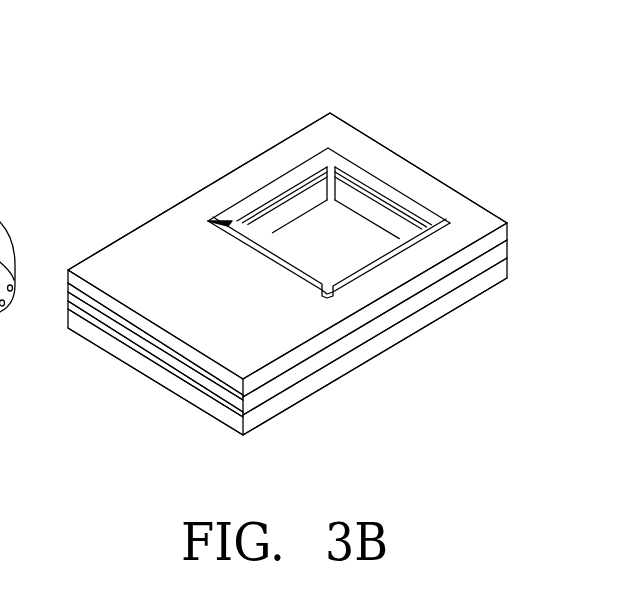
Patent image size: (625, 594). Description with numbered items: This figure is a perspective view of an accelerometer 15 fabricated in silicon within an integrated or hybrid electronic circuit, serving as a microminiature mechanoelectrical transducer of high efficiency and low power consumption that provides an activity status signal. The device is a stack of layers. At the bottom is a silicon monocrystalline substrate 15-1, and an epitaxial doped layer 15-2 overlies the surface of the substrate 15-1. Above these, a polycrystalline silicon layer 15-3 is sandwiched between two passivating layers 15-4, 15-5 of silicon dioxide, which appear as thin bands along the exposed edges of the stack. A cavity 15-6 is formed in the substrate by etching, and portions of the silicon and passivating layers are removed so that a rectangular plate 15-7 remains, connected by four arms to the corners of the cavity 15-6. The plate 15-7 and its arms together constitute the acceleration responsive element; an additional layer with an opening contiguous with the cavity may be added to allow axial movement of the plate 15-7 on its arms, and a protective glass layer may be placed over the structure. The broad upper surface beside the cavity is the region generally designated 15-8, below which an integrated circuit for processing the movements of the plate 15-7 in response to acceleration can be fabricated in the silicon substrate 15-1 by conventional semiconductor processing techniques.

The accelerometer 15 is at (190, 185).
The silicon monocrystalline substrate 15-1 is at (445, 303).
The epitaxial doped layer 15-2 is at (393, 327).
The polycrystalline silicon layer 15-3 is at (97, 318).
The passivating layer 15-4 is at (150, 362).
The passivating layer 15-5 is at (218, 385).
The cavity 15-6 is at (347, 277).
The rectangular plate 15-7 is at (347, 218).
The region for integrated circuit 15-8 is at (165, 258).